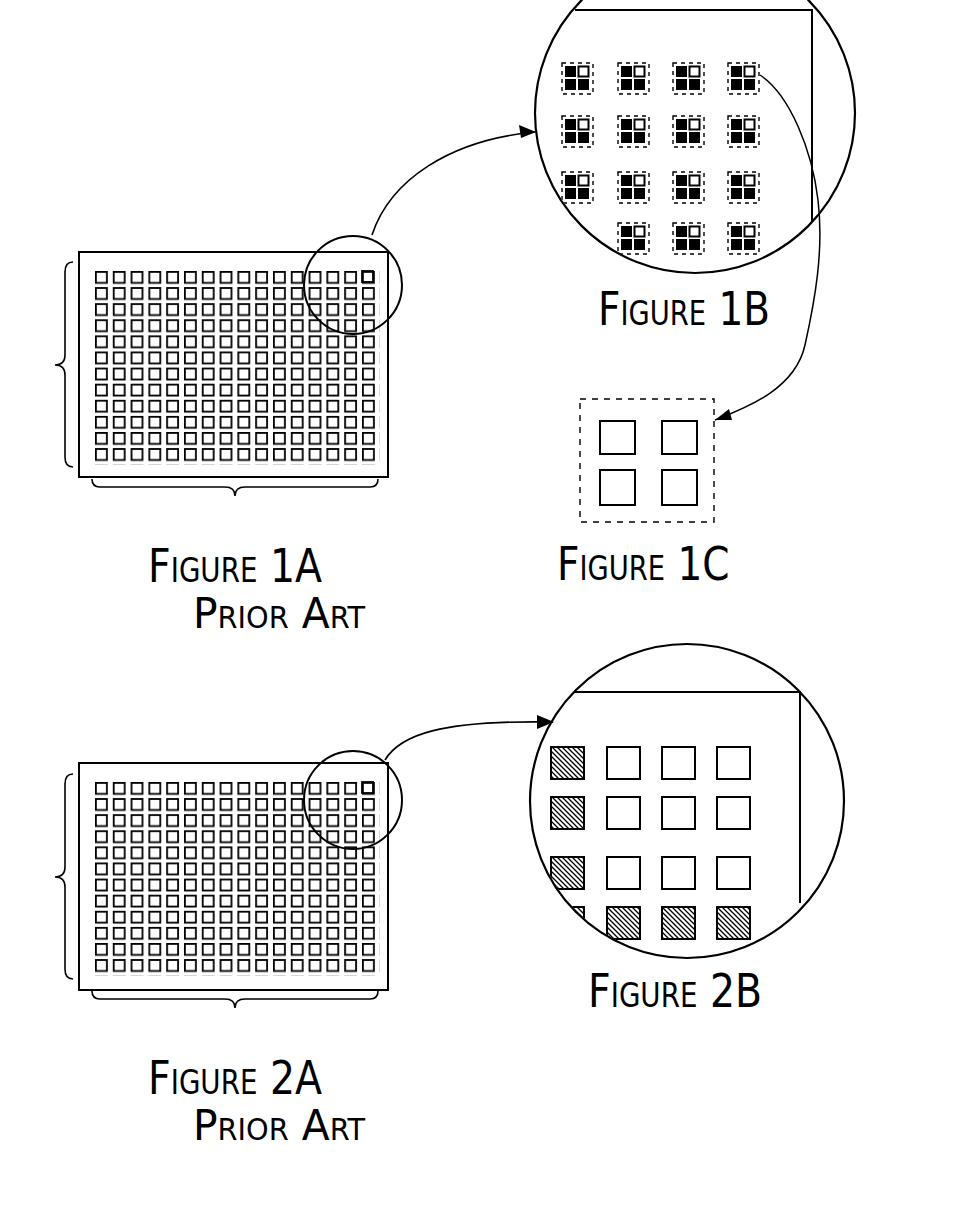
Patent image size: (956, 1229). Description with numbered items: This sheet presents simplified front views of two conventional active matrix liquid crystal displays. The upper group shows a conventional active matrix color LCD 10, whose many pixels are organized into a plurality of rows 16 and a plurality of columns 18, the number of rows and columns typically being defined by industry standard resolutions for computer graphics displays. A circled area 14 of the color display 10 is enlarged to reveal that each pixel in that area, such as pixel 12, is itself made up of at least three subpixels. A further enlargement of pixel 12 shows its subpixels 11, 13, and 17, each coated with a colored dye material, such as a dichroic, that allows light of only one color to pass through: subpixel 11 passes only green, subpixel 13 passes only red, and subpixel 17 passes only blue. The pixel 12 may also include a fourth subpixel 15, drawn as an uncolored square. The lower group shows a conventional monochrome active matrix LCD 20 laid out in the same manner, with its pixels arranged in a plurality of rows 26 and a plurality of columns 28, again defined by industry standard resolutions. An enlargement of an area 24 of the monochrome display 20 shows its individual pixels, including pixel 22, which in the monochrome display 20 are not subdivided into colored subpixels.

In FIG. 1A, the active matrix color LCD 10 is at (170, 225).
In FIG. 1A, the pixel 12 is at (368, 270).
In FIG. 1B, the pixel 12 is at (747, 62).
In FIG. 1C, the pixel 12 is at (658, 370).
In FIG. 1A, the area 14 is at (400, 305).
In FIG. 1B, the area 14 is at (826, 206).
In FIG. 1A, the rows 16 is at (47, 364).
In FIG. 1A, the columns 18 is at (235, 502).
In FIG. 1C, the subpixel 11 is at (600, 425).
In FIG. 1C, the subpixel 13 is at (697, 440).
In FIG. 1C, the fourth subpixel 15 is at (600, 495).
In FIG. 1C, the subpixel 17 is at (697, 493).
In FIG. 2A, the monochrome active matrix LCD 20 is at (170, 737).
In FIG. 2A, the pixel 22 is at (368, 781).
In FIG. 2B, the pixel 22 is at (743, 747).
In FIG. 2A, the area 24 is at (402, 815).
In FIG. 2B, the area 24 is at (818, 888).
In FIG. 2A, the rows 26 is at (47, 876).
In FIG. 2A, the columns 28 is at (235, 1014).